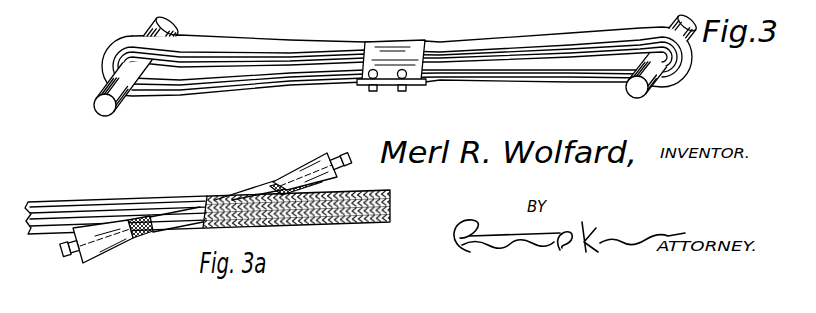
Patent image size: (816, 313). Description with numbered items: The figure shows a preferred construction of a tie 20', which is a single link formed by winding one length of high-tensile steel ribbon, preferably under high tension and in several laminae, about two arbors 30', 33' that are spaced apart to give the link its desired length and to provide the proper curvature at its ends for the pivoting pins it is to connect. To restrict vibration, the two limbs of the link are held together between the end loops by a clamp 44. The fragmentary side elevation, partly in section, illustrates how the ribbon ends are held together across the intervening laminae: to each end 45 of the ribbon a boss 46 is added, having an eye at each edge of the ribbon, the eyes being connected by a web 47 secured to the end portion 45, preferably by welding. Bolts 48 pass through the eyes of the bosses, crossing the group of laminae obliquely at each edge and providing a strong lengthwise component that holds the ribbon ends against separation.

In FIG. 3, the tie 20' is at (397, 49).
In FIG. 3, the clamp 44 is at (400, 53).
In FIG. 3, the arbor 33' is at (121, 85).
In FIG. 3, the arbor 30' is at (631, 72).
In FIG. 3A, the end of the ribbon 45 is at (123, 243).
In FIG. 3A, the boss 46 is at (97, 252).
In FIG. 3A, the web 47 is at (78, 230).
In FIG. 3A, the bolt 48 is at (245, 198).